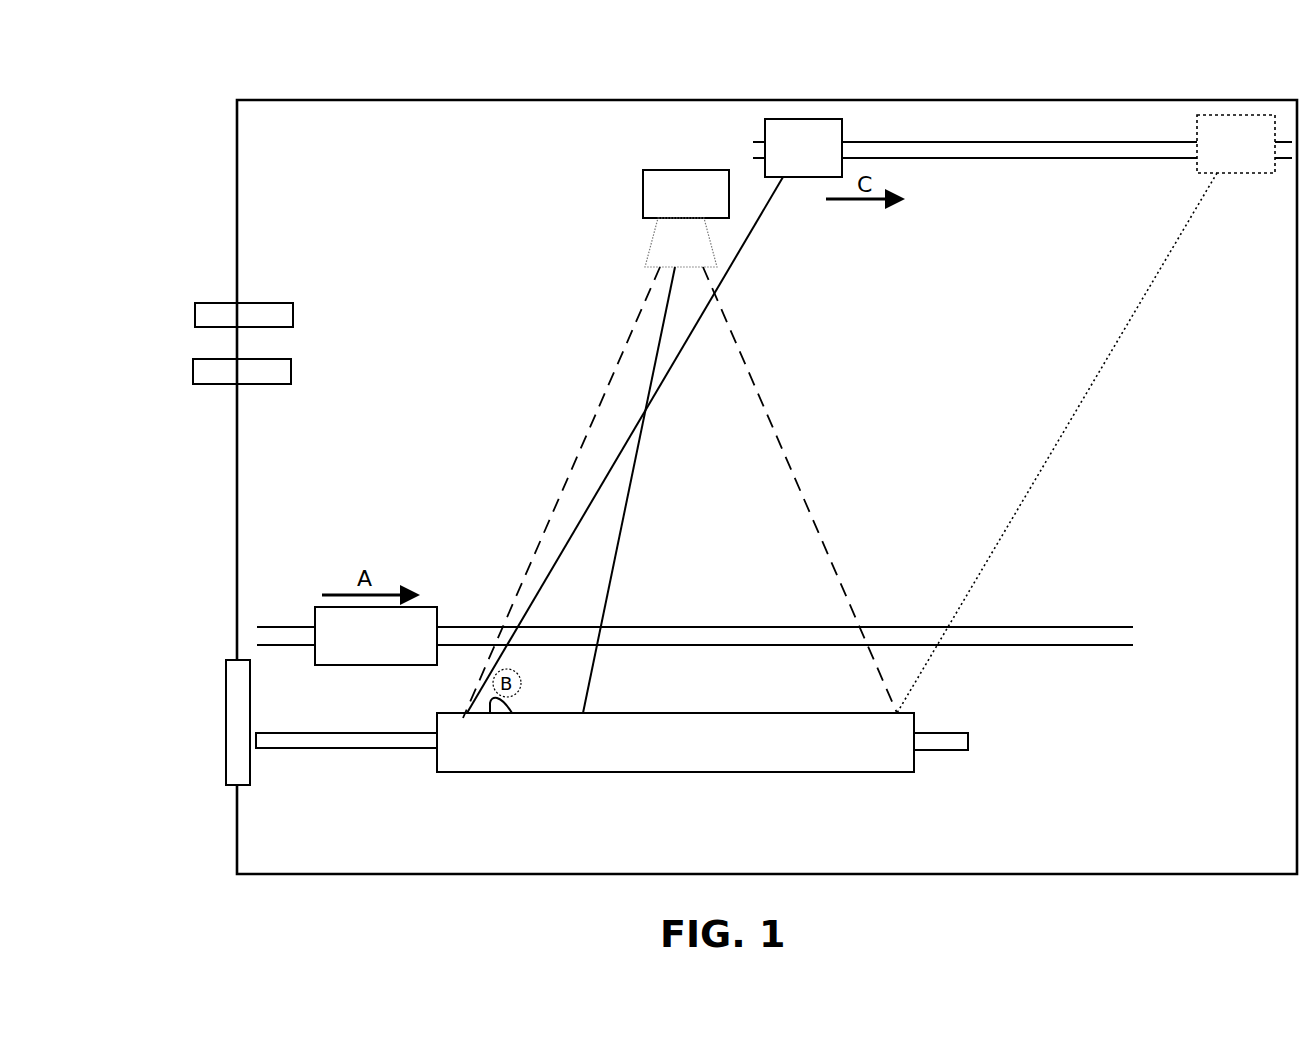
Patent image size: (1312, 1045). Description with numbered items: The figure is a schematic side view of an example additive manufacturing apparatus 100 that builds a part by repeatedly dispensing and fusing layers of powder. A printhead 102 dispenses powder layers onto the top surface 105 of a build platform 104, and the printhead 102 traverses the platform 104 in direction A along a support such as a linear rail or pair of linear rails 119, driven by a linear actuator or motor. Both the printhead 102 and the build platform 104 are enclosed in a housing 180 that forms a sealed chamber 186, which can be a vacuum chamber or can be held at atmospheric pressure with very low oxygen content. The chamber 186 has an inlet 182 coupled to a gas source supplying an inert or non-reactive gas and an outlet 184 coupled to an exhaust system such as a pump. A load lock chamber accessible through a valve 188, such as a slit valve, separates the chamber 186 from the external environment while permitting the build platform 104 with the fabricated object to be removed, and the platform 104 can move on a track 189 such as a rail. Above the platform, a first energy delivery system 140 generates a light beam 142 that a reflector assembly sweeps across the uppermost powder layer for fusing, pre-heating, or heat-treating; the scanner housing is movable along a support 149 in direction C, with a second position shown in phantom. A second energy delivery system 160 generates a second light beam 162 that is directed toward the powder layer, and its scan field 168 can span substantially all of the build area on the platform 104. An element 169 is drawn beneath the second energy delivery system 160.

The additive manufacturing apparatus 100 is at (197, 99).
The housing 180 is at (365, 100).
The sealed chamber 186 is at (407, 213).
The inlet 182 is at (215, 317).
The outlet 184 is at (213, 375).
The valve 188 is at (236, 738).
The track 189 is at (356, 746).
The linear rails 119 is at (288, 635).
The printhead 102 is at (376, 636).
The build platform 104 is at (702, 742).
The top surface 105 is at (490, 713).
The first energy delivery system 140 is at (803, 148).
The light beam 142 is at (758, 224).
The support 149 is at (935, 158).
The second energy delivery system 160 is at (631, 197).
The second light beam 162 is at (660, 347).
The scan field 168 is at (647, 302).
The lens 169 is at (681, 242).